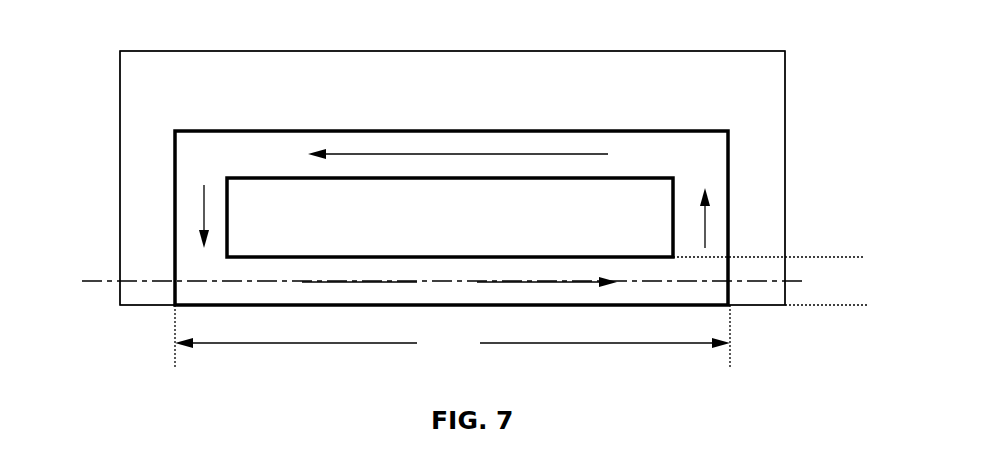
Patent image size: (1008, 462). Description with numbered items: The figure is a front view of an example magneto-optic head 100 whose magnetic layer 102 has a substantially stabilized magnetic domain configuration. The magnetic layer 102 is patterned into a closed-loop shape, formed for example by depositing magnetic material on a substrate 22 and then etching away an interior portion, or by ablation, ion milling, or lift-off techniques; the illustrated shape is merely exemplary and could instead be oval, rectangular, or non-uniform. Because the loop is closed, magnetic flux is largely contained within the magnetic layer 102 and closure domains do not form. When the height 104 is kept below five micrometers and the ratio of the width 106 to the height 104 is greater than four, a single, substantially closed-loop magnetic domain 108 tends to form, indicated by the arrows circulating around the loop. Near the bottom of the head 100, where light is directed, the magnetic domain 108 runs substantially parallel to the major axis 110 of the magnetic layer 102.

The substrate 22 is at (142, 193).
The magneto-optic head 100 is at (96, 72).
The magnetic layer 102 is at (253, 148).
The height 104 is at (855, 283).
The width 106 is at (452, 336).
The magnetic domain 108 is at (468, 292).
The major axis 110 is at (95, 282).